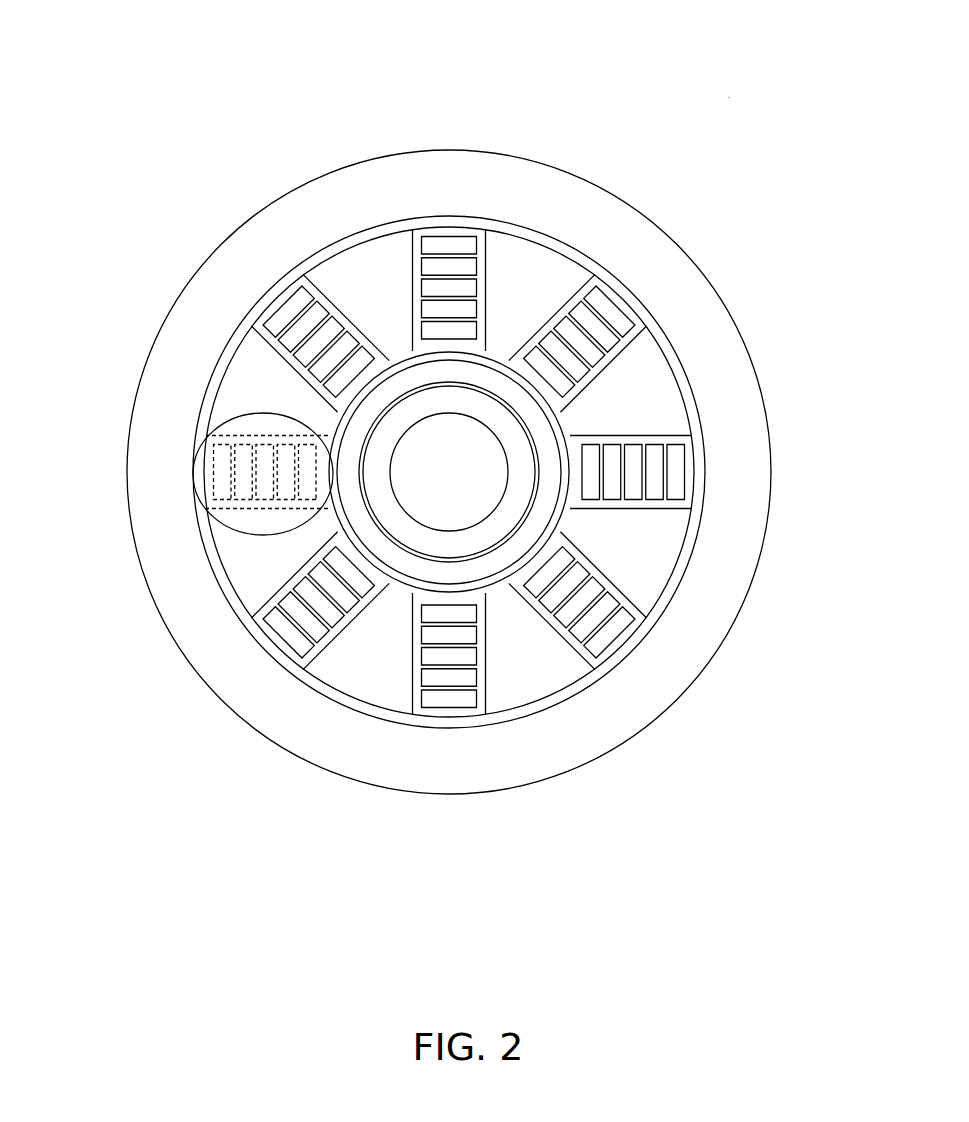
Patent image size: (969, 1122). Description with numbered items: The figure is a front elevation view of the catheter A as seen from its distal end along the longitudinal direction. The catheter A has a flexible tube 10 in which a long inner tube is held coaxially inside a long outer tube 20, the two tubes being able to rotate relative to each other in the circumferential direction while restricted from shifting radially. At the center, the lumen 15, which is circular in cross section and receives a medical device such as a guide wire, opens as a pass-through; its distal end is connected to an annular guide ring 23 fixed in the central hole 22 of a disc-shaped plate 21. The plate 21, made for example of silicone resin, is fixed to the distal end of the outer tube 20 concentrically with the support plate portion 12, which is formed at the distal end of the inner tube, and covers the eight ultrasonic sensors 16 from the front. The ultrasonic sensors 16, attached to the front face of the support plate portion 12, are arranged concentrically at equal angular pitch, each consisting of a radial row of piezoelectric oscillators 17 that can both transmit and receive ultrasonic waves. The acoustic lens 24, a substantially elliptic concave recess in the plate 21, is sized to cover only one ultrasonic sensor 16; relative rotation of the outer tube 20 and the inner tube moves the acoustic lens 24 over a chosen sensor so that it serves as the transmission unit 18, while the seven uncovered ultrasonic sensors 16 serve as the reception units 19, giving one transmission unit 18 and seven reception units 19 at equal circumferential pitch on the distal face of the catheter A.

The tube 10 is at (449, 476).
The support plate portion 12 is at (636, 409).
The lumen 15 is at (485, 540).
The ultrasonic sensors 16 is at (432, 310).
The oscillators 17 is at (540, 392).
The transmission unit 18 is at (241, 425).
The reception unit 19 is at (445, 207).
The outer tube 20 is at (712, 339).
The plate 21 is at (253, 367).
The central hole 22 is at (515, 385).
The guide ring 23 is at (550, 468).
The acoustic lens 24 is at (231, 519).
The catheter A is at (729, 97).